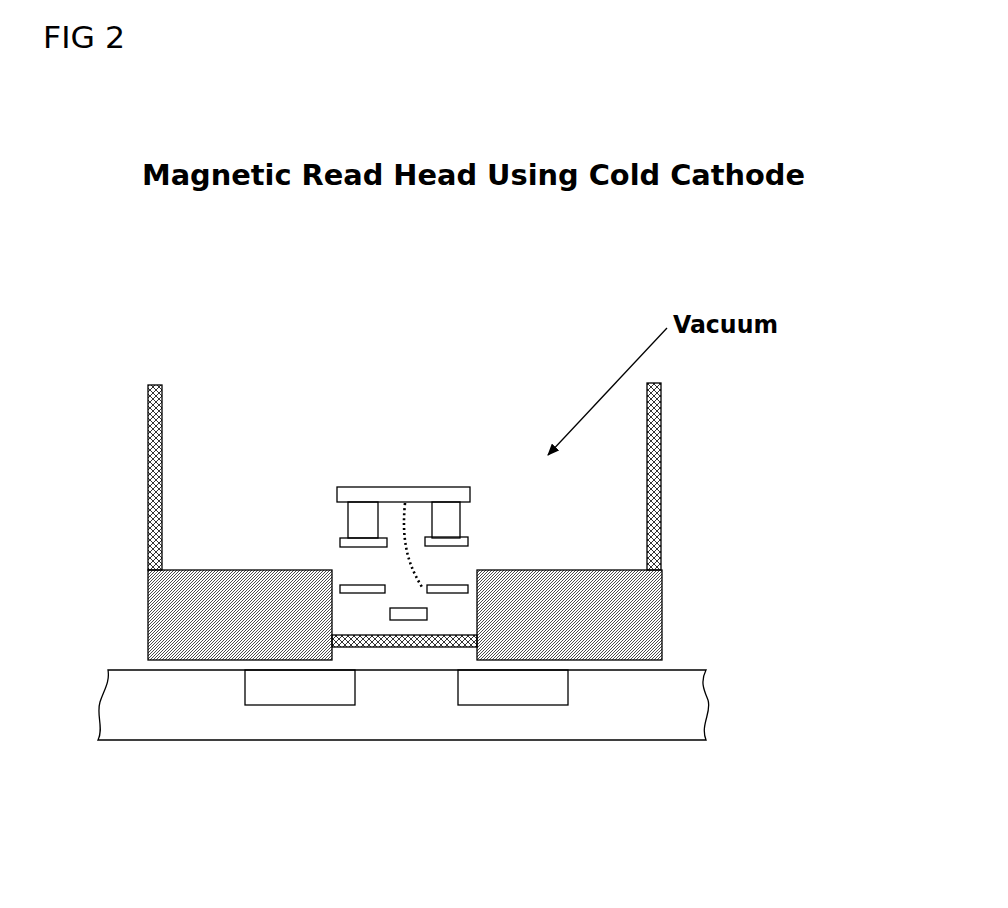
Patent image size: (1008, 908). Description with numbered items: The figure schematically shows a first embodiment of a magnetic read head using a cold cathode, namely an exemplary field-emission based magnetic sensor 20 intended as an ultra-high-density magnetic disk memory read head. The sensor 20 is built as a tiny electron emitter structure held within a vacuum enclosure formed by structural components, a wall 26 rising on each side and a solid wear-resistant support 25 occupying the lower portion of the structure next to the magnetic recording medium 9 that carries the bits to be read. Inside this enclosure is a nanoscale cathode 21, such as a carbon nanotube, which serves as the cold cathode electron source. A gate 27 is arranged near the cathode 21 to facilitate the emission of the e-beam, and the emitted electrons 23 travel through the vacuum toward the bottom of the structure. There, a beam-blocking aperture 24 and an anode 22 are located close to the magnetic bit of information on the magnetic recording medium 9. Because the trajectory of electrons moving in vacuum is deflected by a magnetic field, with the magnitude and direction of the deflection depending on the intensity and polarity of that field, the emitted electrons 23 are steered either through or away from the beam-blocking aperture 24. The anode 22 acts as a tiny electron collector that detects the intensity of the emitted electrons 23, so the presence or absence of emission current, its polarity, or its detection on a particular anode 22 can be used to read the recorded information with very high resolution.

The field-emission based magnetic sensor 20 is at (235, 299).
The wall 26 is at (163, 402).
The nanoscale cathode 21 is at (404, 506).
The gate 27 is at (336, 542).
The emitted electrons 23 is at (420, 571).
The solid wear-resistant support 25 is at (600, 613).
The anode 22 is at (392, 623).
The beam-blocking aperture 24 is at (458, 596).
The magnetic recording medium 9 is at (633, 714).